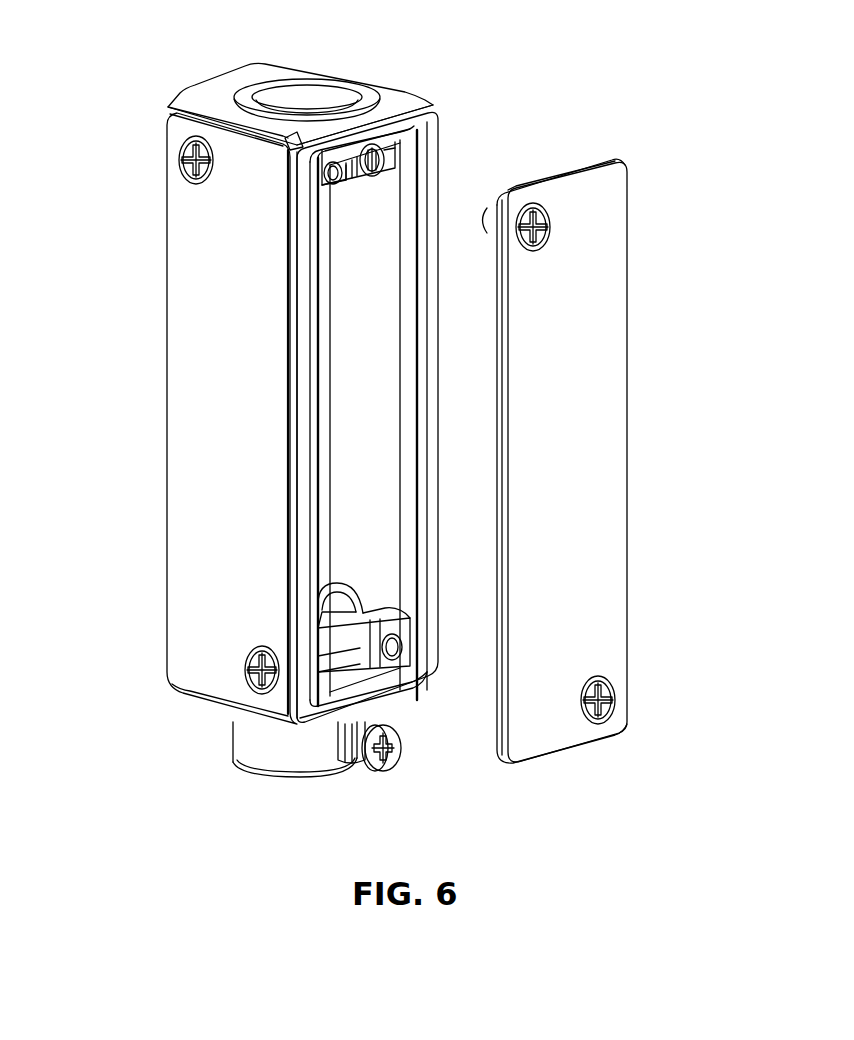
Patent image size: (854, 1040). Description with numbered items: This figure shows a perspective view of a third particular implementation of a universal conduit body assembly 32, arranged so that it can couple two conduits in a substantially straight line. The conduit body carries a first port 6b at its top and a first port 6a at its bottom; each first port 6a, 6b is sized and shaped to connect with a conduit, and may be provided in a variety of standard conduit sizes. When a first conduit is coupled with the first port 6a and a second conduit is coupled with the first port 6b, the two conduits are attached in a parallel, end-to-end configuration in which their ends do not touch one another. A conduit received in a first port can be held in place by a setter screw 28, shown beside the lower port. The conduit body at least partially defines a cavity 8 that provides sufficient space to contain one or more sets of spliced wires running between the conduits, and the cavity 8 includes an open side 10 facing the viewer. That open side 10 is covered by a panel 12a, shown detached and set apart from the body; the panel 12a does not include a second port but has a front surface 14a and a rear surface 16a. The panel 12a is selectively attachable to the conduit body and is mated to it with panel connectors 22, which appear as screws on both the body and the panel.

The universal conduit body assembly 32 is at (110, 76).
The first port 6a is at (273, 748).
The first port 6b is at (360, 90).
The cavity 8 is at (340, 407).
The open side 10 is at (377, 474).
The panel 12a is at (205, 427).
The front surface 14a is at (607, 280).
The rear surface 16a is at (567, 170).
The panel connector 22 is at (185, 165).
The setter screw 28 is at (398, 760).